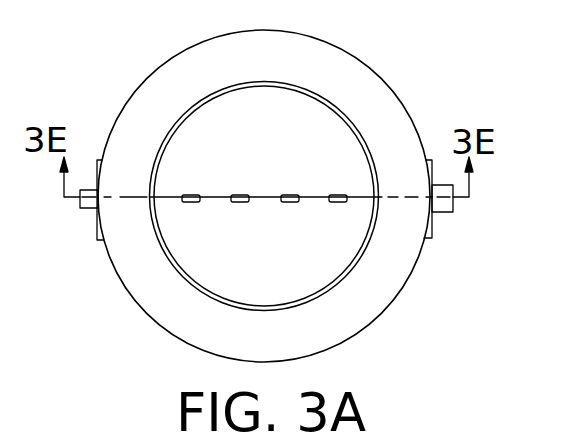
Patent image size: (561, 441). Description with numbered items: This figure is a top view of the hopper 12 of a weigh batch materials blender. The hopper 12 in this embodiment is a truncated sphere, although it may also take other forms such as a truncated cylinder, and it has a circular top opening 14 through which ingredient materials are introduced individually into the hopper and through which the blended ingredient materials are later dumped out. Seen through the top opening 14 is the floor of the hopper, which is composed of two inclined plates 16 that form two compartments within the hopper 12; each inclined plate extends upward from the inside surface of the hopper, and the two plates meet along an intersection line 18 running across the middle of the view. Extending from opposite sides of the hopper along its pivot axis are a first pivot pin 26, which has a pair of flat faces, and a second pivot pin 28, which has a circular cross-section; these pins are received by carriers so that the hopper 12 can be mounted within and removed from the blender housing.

The hopper 12 is at (370, 68).
The top opening 14 is at (277, 82).
The inclined plates 16 is at (215, 128).
The intersection line 18 is at (314, 197).
The first pivot pin 26 is at (85, 208).
The second pivot pin 28 is at (453, 212).